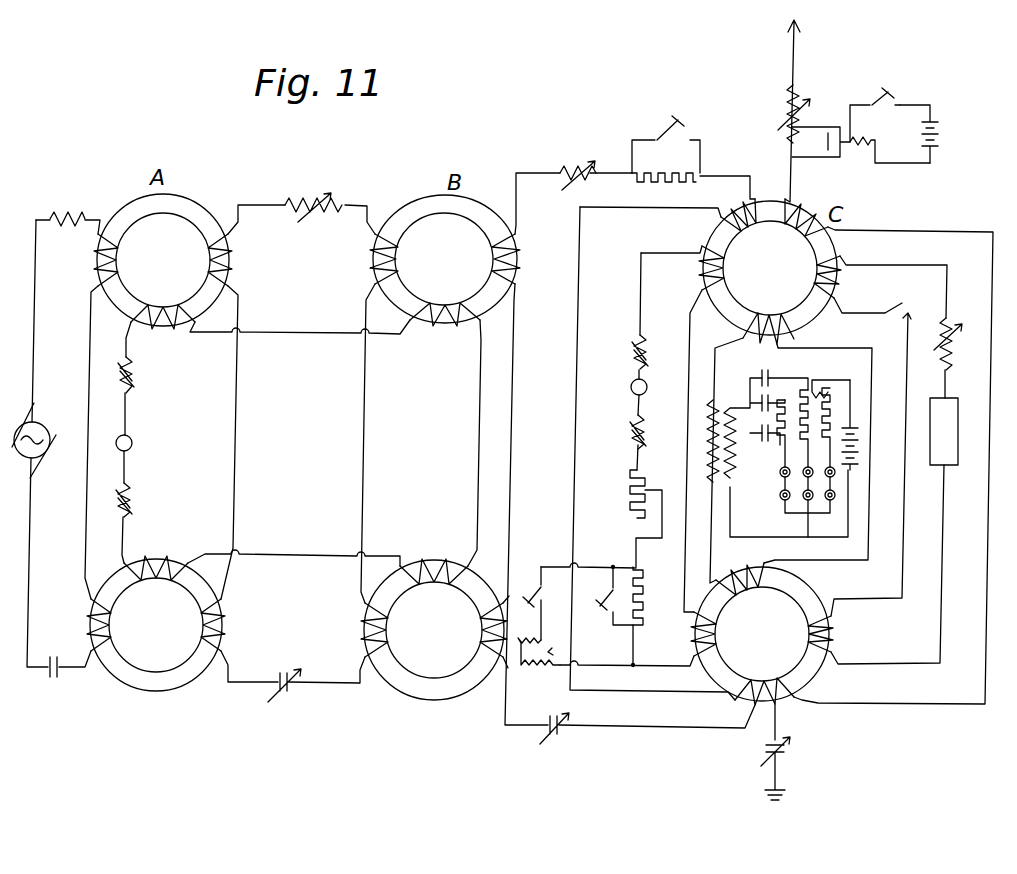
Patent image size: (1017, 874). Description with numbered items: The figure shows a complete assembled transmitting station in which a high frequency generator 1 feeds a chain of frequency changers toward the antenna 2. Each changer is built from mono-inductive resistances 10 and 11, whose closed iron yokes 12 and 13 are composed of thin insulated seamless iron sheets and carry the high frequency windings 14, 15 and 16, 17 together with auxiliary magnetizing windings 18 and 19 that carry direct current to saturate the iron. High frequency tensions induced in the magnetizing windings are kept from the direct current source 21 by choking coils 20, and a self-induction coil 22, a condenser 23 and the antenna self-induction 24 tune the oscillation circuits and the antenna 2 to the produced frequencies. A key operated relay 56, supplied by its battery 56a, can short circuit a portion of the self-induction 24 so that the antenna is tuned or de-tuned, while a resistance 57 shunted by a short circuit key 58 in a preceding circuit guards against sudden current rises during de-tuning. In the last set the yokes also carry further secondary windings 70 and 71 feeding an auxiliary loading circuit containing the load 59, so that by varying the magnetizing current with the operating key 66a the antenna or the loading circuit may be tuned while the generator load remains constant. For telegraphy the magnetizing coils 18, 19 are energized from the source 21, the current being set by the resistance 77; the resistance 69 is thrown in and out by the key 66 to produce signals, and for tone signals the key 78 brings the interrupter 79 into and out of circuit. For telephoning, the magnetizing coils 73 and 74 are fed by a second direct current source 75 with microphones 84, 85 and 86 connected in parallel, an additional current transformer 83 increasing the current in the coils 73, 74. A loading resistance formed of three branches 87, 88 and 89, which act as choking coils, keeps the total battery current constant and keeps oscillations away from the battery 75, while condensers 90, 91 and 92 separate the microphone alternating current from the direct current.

The high frequency generator 1 is at (30, 440).
The antenna 2 is at (797, 111).
The mono-inductive resistance 10 is at (163, 260).
The mono-inductive resistance 11 is at (168, 636).
The closed iron yoke 12 is at (200, 213).
The closed iron yoke 13 is at (173, 690).
The winding 14 is at (94, 268).
The secondary winding 15 is at (230, 268).
The winding 16 is at (89, 634).
The secondary winding 17 is at (224, 634).
The auxiliary magnetizing winding 18 is at (167, 327).
The auxiliary magnetizing winding 19 is at (172, 558).
The choking coil 20 is at (139, 375).
The direct current source 21 is at (132, 446).
The self-induction coil 22 is at (78, 218).
The condenser 23 is at (68, 662).
The self-induction of the antenna 24 is at (781, 114).
The key operated relay 56 is at (861, 140).
The battery 56a is at (936, 134).
The resistance 57 is at (664, 188).
The short circuit key 58 is at (670, 144).
The load 59 is at (955, 431).
The key 66 is at (891, 110).
The operating key 66a is at (604, 604).
The resistance 69 is at (644, 600).
The further secondary winding 70 is at (838, 290).
The further secondary winding 71 is at (830, 630).
The magnetizing coil 73 is at (748, 322).
The magnetizing coil 74 is at (762, 634).
The second direct current source 75 is at (858, 450).
The resistance 77 is at (633, 518).
The key 78 is at (544, 603).
The interrupter 79 is at (539, 666).
The current transformer 83 is at (702, 441).
The microphone 84 is at (780, 486).
The microphone 85 is at (806, 488).
The microphone 86 is at (836, 488).
The loading resistance branch 87 is at (782, 440).
The loading resistance branch 88 is at (820, 390).
The loading resistance branch 89 is at (833, 412).
The condenser 90 is at (762, 438).
The condenser 91 is at (760, 402).
The condenser 92 is at (768, 374).